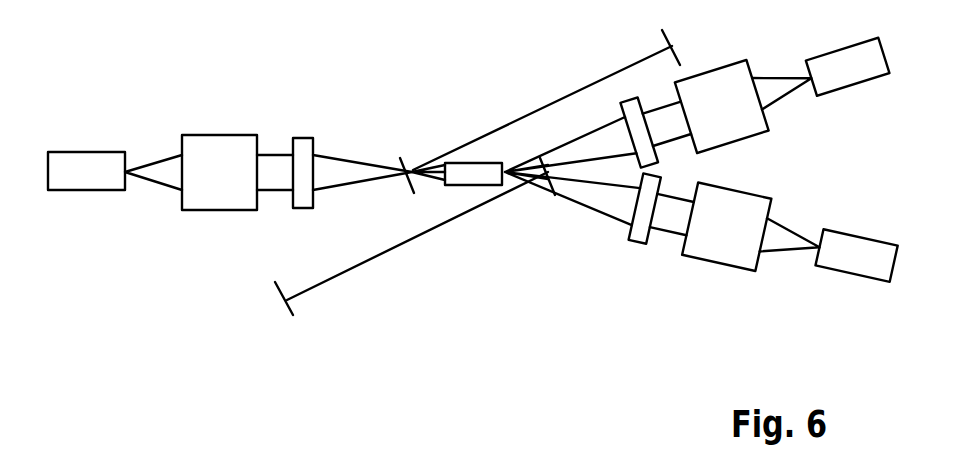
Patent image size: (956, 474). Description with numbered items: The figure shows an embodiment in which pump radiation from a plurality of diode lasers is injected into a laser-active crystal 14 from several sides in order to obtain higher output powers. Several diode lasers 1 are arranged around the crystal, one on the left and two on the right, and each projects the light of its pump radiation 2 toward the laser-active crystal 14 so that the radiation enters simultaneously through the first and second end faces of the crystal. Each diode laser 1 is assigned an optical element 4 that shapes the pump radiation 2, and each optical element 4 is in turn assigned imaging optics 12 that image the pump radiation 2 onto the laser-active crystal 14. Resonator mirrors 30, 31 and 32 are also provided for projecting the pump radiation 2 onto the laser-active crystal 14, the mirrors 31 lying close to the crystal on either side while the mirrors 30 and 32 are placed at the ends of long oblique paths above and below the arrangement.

The diode laser 1 is at (100, 187).
The pump radiation 2 is at (152, 160).
The optical element 4 is at (215, 200).
The imaging optics 12 is at (297, 140).
The laser-active crystal 14 is at (460, 168).
The resonator mirror 30 is at (680, 56).
The resonator mirror 31 is at (415, 192).
The resonator mirror 32 is at (288, 310).